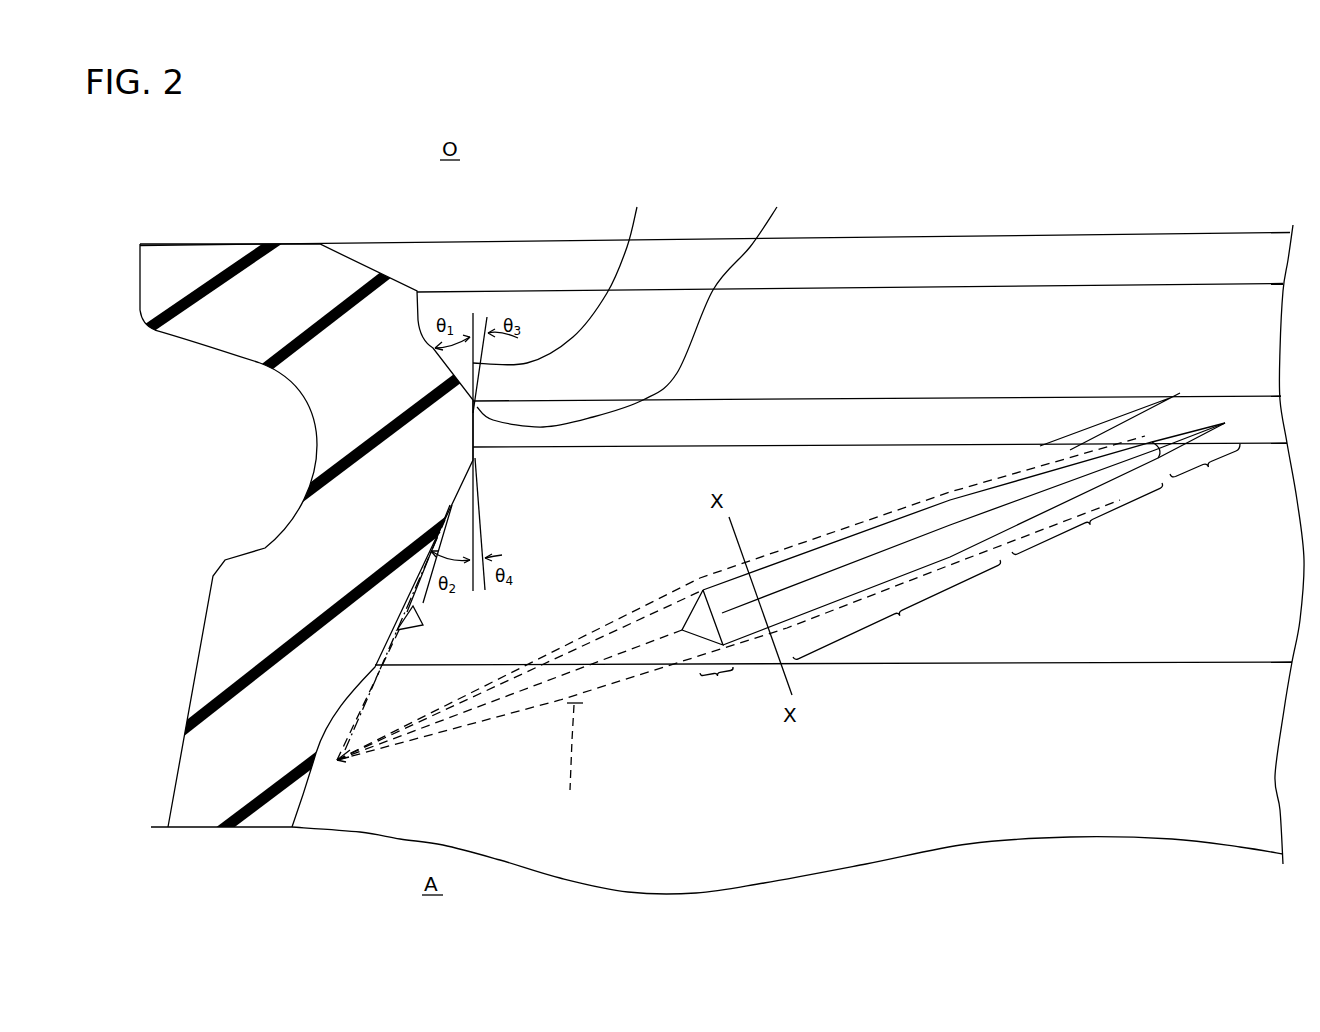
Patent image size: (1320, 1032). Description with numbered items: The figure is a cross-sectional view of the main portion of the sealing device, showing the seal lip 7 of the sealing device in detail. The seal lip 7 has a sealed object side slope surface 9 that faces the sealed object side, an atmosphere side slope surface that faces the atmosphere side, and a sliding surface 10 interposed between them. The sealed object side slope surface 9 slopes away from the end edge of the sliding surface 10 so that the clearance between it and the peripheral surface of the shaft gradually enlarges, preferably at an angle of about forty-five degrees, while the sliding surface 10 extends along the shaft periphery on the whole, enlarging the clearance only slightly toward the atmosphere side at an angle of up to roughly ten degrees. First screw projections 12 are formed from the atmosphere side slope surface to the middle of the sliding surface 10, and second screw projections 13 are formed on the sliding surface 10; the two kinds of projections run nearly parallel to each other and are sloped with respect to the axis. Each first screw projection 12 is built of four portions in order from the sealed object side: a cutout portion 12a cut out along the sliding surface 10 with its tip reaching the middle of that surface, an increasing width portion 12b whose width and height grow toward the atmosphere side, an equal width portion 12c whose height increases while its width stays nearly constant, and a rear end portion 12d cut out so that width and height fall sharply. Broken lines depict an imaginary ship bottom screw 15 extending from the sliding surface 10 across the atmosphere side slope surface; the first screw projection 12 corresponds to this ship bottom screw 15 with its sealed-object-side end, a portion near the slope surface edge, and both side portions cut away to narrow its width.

The seal lip 7 is at (227, 257).
The sealed object side slope surface 9 is at (607, 367).
The sliding surface 10 is at (693, 423).
The first screw projection 12 is at (987, 490).
The cutout portion 12a is at (1205, 473).
The increasing width portion 12b is at (1087, 525).
The equal width portion 12c is at (897, 609).
The rear end portion 12d is at (721, 693).
The second screw projection 13 is at (1117, 410).
The ship bottom screw 15 is at (387, 677).